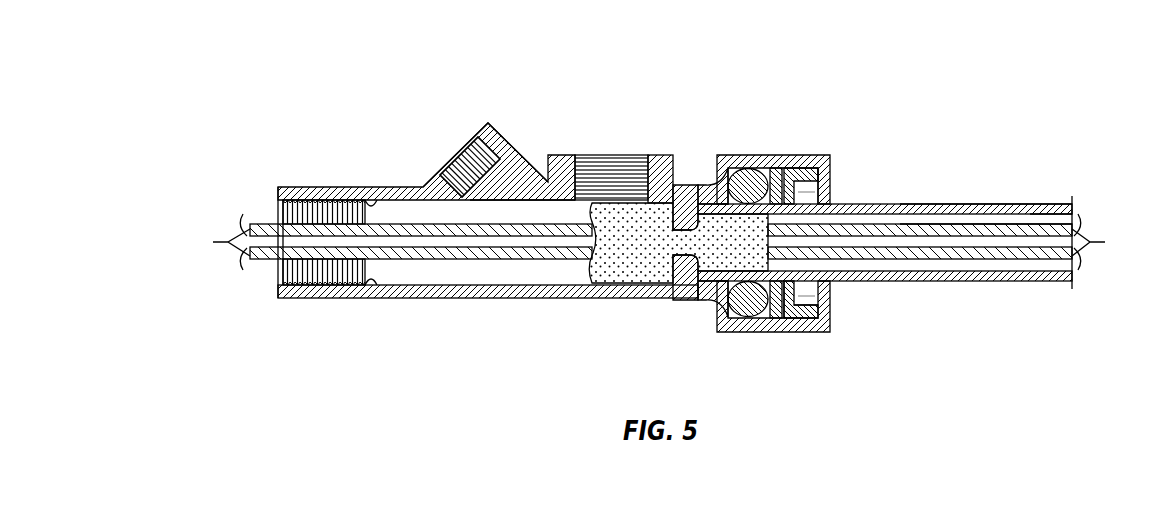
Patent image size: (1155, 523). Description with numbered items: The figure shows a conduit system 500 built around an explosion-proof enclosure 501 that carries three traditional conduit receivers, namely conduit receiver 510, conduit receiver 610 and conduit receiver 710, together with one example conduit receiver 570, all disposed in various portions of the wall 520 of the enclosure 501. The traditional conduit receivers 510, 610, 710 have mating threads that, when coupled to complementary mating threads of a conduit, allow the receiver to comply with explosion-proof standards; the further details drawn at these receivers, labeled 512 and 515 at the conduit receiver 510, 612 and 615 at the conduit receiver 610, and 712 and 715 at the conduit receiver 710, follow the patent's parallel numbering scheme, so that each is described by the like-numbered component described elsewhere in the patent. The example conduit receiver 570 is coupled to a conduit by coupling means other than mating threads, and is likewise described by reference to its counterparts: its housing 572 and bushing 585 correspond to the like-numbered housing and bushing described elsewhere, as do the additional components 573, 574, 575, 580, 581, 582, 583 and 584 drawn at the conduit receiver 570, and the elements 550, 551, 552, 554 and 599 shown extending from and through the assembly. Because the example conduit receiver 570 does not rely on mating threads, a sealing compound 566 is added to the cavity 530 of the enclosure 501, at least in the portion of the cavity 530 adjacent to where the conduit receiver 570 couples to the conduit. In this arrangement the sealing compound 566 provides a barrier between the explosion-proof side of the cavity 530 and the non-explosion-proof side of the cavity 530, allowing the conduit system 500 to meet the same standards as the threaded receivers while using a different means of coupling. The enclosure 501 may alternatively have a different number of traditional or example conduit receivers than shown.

The conduit system 500 is at (324, 60).
The explosion-proof enclosure 501 is at (475, 316).
The conduit receiver 510 is at (332, 182).
The internal threads 512 is at (292, 198).
The thread termination 515 is at (372, 205).
The wall 520 is at (575, 285).
The cavity 530 is at (525, 272).
The tube 550 is at (898, 290).
The tube wall 551 is at (1004, 203).
The tube outer surface 552 is at (953, 203).
The tube end 554 is at (1052, 203).
The sealing compound 566 is at (630, 267).
The conduit receiver 570 is at (826, 140).
The housing 572 is at (786, 338).
The pocket 573 is at (814, 195).
The nut bottom wall 574 is at (817, 330).
The O-ring seal 575 is at (728, 184).
The nut end wall 580 is at (825, 175).
The washer 581 is at (808, 310).
The backing ring 582 is at (790, 290).
The retaining ring 583 is at (787, 178).
The spacer ring 584 is at (762, 178).
The bushing 585 is at (683, 267).
The optical fiber 599 is at (660, 242).
The conduit receiver 610 is at (662, 150).
The plug threads 612 is at (580, 170).
The housing inner surface 615 is at (578, 200).
The conduit receiver 710 is at (502, 123).
The side port threads 712 is at (446, 173).
The plug threads 715 is at (485, 160).